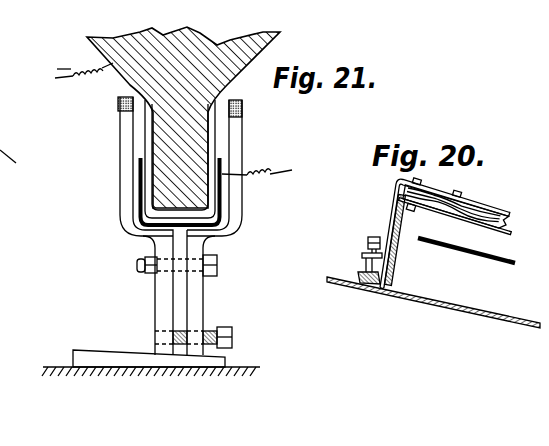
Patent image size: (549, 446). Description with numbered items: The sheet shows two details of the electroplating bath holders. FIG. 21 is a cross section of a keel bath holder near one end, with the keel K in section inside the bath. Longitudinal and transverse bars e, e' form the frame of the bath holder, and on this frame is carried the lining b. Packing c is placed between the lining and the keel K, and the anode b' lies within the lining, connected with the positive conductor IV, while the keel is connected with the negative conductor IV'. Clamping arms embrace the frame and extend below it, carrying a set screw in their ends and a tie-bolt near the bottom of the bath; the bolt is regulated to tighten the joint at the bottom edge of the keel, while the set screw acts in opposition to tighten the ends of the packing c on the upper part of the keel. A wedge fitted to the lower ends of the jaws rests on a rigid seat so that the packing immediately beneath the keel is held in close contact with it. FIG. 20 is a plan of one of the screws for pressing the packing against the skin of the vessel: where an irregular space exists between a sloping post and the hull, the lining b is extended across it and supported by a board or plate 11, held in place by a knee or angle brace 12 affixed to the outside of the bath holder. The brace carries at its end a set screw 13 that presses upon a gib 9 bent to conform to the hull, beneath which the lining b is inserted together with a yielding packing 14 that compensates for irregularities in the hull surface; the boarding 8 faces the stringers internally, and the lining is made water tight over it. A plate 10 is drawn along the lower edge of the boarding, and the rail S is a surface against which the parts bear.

In FIG. 21, the keel K is at (190, 139).
In FIG. 20, the lining b is at (410, 285).
In FIG. 21, the lining b is at (200, 144).
In FIG. 20, the anode b' is at (466, 264).
In FIG. 21, the anode b' is at (148, 189).
In FIG. 21, the packing c is at (132, 88).
In FIG. 21, the longitudinal bar e is at (254, 118).
In FIG. 21, the transverse bar e' is at (258, 100).
In FIG. 21, the positive conductor IV is at (266, 179).
In FIG. 21, the negative conductor IV' is at (74, 81).
In FIG. 20, the boarding 8 is at (462, 222).
In FIG. 20, the gib 9 is at (360, 272).
In FIG. 20, the plate 10 is at (509, 237).
In FIG. 20, the board or plate 11 is at (391, 267).
In FIG. 20, the knee or angle brace 12 is at (392, 210).
In FIG. 20, the set screw 13 is at (368, 247).
In FIG. 20, the yielding packing 14 is at (358, 280).
In FIG. 20, the rail S is at (412, 297).